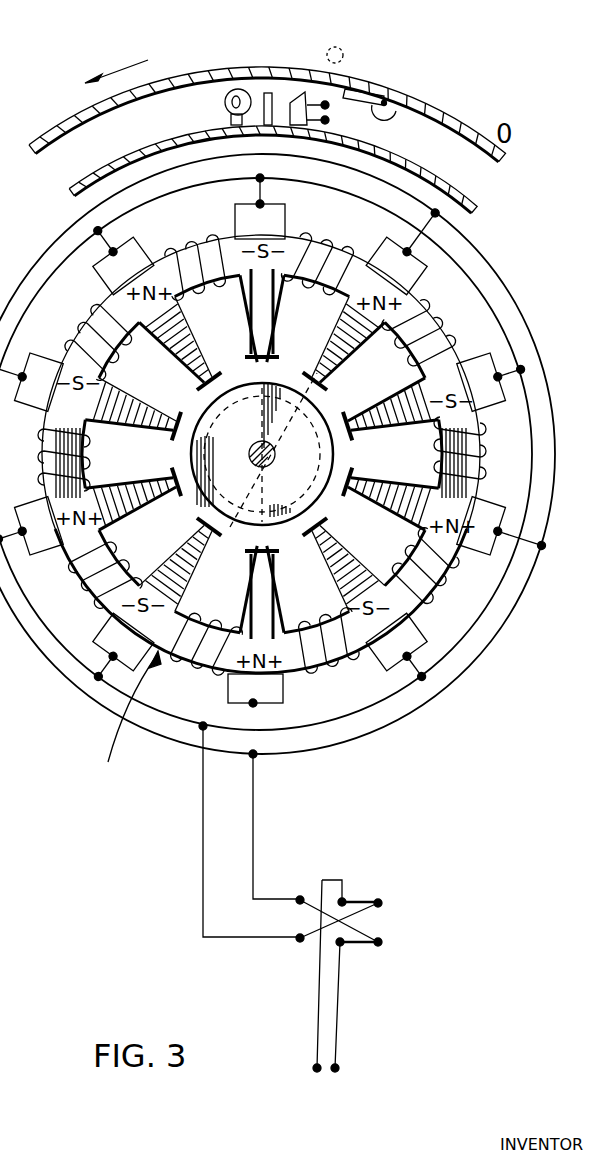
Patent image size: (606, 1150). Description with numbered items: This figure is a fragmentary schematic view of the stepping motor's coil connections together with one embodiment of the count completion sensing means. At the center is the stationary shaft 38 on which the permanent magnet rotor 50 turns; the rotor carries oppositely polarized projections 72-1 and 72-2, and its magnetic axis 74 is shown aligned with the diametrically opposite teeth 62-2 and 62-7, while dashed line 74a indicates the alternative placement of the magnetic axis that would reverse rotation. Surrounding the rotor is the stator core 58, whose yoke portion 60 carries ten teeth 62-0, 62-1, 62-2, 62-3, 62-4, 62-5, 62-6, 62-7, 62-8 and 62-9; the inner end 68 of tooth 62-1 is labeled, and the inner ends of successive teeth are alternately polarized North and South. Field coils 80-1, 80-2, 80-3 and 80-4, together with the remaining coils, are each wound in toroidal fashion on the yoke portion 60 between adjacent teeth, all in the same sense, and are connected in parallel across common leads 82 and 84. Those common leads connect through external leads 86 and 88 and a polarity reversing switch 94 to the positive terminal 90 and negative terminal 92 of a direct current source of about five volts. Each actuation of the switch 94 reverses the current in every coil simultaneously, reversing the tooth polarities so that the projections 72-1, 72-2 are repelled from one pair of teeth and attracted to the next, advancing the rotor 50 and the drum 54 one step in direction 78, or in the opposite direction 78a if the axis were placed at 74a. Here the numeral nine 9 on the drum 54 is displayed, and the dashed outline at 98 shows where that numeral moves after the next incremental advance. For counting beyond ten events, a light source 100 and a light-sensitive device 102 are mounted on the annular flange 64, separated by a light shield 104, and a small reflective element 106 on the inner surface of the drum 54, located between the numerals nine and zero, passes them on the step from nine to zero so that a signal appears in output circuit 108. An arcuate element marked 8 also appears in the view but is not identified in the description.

The outer arcuate track 8 is at (267, 114).
The pickup element 9 is at (270, 48).
The stationary shaft 38 is at (276, 456).
The permanent magnet rotor 50 is at (300, 470).
The drum 54 is at (460, 125).
The stator core 58 is at (123, 722).
The yoke portion 60 is at (285, 665).
The tooth 62-0 is at (165, 440).
The tooth 62-1 is at (237, 322).
The tooth 62-2 is at (285, 350).
The tooth 62-3 is at (345, 338).
The tooth 62-4 is at (400, 428).
The tooth 62-5 is at (340, 508).
The tooth 62-6 is at (310, 568).
The tooth 62-7 is at (250, 568).
The tooth 62-8 is at (190, 530).
The tooth 62-9 is at (170, 482).
The annular flange 64 is at (465, 200).
The inner end of tooth 68 is at (200, 376).
The projection 72-1 is at (276, 375).
The projection 72-2 is at (268, 545).
The magnetic axis 74 is at (212, 492).
The alternative magnetic axis 74a is at (300, 460).
The direction of rotation 78 is at (218, 478).
The opposite direction of rotation 78a is at (250, 420).
The field coil 80-1 is at (95, 340).
The field coil 80-2 is at (190, 248).
The field coil 80-3 is at (345, 230).
The field coil 80-4 is at (450, 335).
The common lead 82 is at (513, 612).
The common lead 84 is at (477, 630).
The external lead 86 is at (253, 818).
The external lead 88 is at (202, 857).
The positive terminal 90 is at (335, 1068).
The negative terminal 92 is at (316, 1068).
The polarity reversing switch 94 is at (352, 886).
The dashed-line numeral position 98 is at (343, 55).
The light source 100 is at (228, 94).
The light-sensitive device 102 is at (306, 92).
The light shield 104 is at (264, 93).
The reflective element 106 is at (402, 118).
The output circuit 108 is at (325, 105).